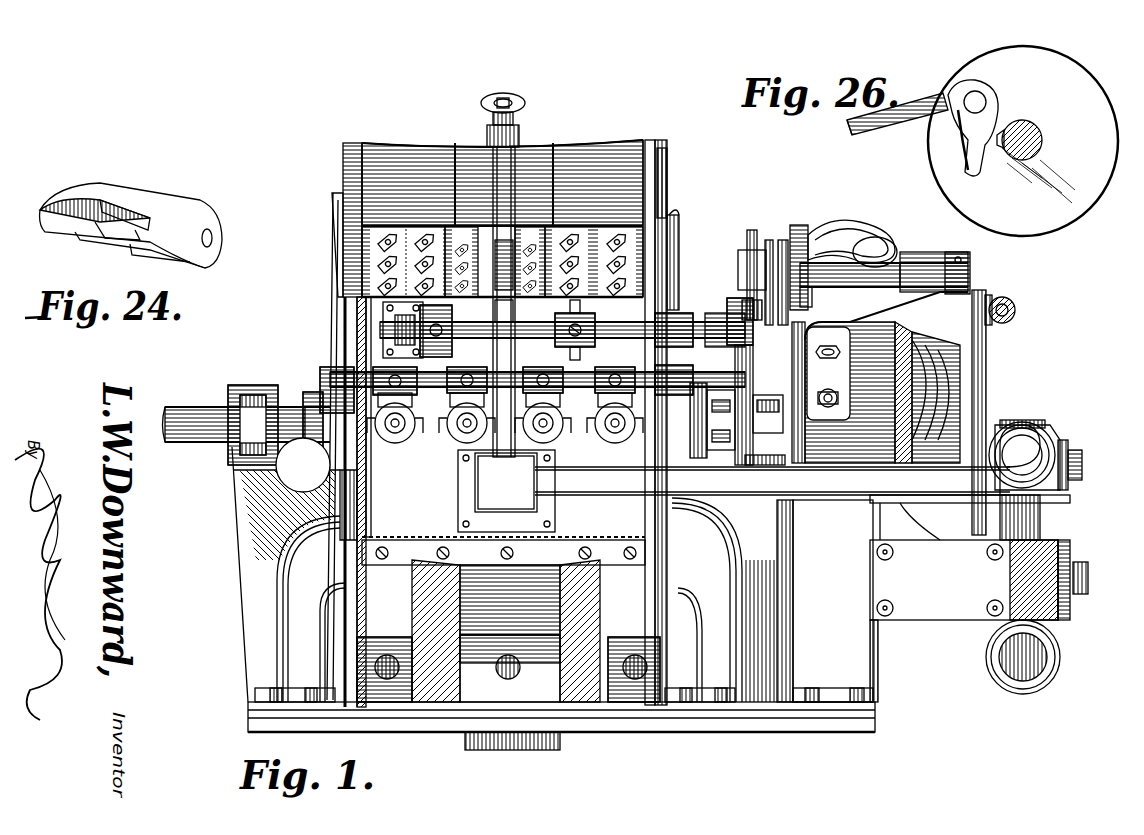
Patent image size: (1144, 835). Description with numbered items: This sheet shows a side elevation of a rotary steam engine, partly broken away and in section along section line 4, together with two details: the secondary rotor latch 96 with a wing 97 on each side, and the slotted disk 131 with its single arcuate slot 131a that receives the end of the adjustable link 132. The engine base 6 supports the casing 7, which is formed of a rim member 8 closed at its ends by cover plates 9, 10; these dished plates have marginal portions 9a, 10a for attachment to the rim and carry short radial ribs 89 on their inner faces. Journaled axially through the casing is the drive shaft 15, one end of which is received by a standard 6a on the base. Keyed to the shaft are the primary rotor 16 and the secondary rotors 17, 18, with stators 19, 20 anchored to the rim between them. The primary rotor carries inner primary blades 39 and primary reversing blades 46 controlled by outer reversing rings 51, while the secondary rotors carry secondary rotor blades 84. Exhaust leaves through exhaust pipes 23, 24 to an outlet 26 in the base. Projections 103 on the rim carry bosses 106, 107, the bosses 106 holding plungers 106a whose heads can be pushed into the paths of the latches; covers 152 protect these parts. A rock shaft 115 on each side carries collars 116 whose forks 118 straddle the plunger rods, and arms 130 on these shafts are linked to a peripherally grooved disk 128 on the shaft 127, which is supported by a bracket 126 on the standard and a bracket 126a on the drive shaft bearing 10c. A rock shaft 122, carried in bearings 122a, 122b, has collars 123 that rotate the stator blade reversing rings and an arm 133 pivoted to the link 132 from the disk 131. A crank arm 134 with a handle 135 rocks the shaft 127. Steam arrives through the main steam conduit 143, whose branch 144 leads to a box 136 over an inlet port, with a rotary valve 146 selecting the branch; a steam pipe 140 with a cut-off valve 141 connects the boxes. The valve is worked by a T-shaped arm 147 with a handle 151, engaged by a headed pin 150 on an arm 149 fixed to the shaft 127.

In FIG. 1, the section line 4 is at (503, 60).
In FIG. 1, the engine base 6 is at (758, 732).
In FIG. 1, the standard 6a is at (825, 601).
In FIG. 1, the casing 7 is at (660, 130).
In FIG. 1, the rim member 8 is at (520, 150).
In FIG. 1, the cover plate 9 is at (335, 262).
In FIG. 1, the marginal portion of cover plate 9a is at (343, 210).
In FIG. 1, the cover plate 10 is at (688, 422).
In FIG. 1, the marginal portion of cover plate 10a is at (668, 178).
In FIG. 1, the drive shaft bearing 10c is at (750, 470).
In FIG. 1, the drive shaft 15 is at (195, 440).
In FIG. 1, the primary rotor 16 is at (520, 320).
In FIG. 1, the secondary rotor 17 is at (350, 295).
In FIG. 1, the secondary rotor 18 is at (655, 262).
In FIG. 1, the stator 19 is at (420, 228).
In FIG. 1, the stator 20 is at (598, 228).
In FIG. 1, the exhaust pipe 23 is at (293, 643).
In FIG. 1, the exhaust pipe 24 is at (737, 640).
In FIG. 1, the outlet 26 is at (560, 745).
In FIG. 1, the inner primary blades 39 is at (535, 230).
In FIG. 1, the primary reversing blades 46 is at (470, 318).
In FIG. 1, the outer reversing rings 51 is at (462, 228).
In FIG. 1, the secondary rotor blades 84 is at (388, 228).
In FIG. 1, the ribs 89 is at (350, 278).
In FIG. 24, the secondary rotor latch 96 is at (160, 197).
In FIG. 24, the wing 97 is at (130, 238).
In FIG. 1, the projections 103 is at (390, 515).
In FIG. 1, the bosses 106 is at (470, 445).
In FIG. 1, the plungers 106a is at (618, 356).
In FIG. 1, the bosses 107 is at (400, 445).
In FIG. 1, the rock shaft 115 is at (702, 372).
In FIG. 1, the collars 116 is at (467, 366).
In FIG. 1, the fork 118 is at (490, 445).
In FIG. 1, the rock shaft 122 is at (608, 322).
In FIG. 1, the bearing 122a is at (395, 322).
In FIG. 1, the bearing 122b is at (672, 322).
In FIG. 1, the collars 123 is at (320, 378).
In FIG. 1, the bracket 126 is at (852, 385).
In FIG. 1, the bracket 126a is at (772, 245).
In FIG. 26, the shaft 127 is at (1037, 123).
In FIG. 1, the shaft 127 is at (880, 262).
In FIG. 1, the peripherally grooved disk 128 is at (800, 225).
In FIG. 1, the arms 130 is at (870, 335).
In FIG. 26, the disk 131 is at (1070, 230).
In FIG. 1, the disk 131 is at (752, 230).
In FIG. 26, the arcuate slot 131a is at (968, 172).
In FIG. 26, the adjustable link 132 is at (880, 140).
In FIG. 1, the arm 133 is at (855, 222).
In FIG. 1, the crank arm 134 is at (810, 296).
In FIG. 1, the handle 135 is at (890, 240).
In FIG. 1, the box 136 is at (506, 482).
In FIG. 1, the steam pipe 140 is at (490, 200).
In FIG. 1, the cut-off valve 141 is at (490, 135).
In FIG. 1, the main steam conduit 143 is at (1060, 660).
In FIG. 1, the branch 144 is at (1030, 450).
In FIG. 1, the rotary valve 146 is at (1060, 500).
In FIG. 1, the T-shaped arm 147 is at (986, 370).
In FIG. 1, the arm 149 is at (975, 285).
In FIG. 1, the headed pin 150 is at (992, 300).
In FIG. 1, the handle 151 is at (1015, 312).
In FIG. 1, the covers 152 is at (560, 560).